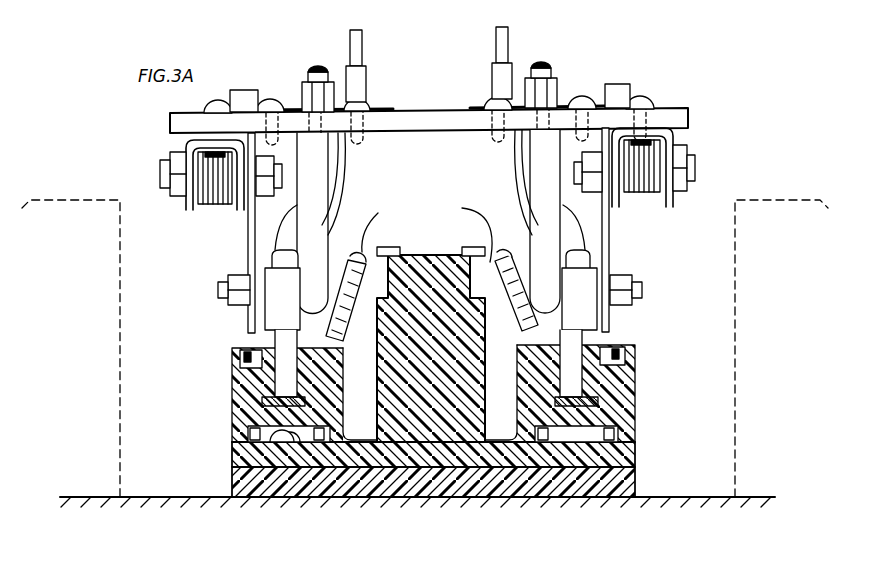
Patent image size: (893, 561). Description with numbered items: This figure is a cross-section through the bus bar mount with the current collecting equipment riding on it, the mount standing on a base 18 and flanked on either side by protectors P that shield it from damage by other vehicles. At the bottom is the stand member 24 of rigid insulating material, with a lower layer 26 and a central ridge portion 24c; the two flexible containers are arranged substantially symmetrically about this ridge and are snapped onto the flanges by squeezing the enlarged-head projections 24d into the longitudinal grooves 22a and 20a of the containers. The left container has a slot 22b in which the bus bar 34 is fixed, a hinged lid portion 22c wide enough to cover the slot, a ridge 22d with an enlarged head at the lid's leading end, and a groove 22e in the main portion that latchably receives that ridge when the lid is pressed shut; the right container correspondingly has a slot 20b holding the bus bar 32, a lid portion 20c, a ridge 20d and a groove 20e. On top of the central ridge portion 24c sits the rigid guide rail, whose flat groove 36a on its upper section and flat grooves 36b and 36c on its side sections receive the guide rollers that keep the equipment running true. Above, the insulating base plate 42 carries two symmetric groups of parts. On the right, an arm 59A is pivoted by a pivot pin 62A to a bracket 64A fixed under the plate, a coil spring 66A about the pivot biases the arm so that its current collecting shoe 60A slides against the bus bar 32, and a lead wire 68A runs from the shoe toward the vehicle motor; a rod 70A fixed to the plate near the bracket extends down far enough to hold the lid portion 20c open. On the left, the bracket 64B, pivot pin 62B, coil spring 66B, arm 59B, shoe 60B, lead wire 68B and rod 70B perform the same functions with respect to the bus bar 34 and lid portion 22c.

The mounting base / ground 18 is at (158, 497).
The protector P is at (89, 204).
The groove 20a is at (620, 426).
The slot 20b is at (590, 336).
The lid portion 20c is at (474, 231).
The ridge 20d is at (508, 258).
The groove 20e is at (612, 354).
The groove 22a is at (250, 436).
The slot 22b is at (270, 350).
The lid portion 22c is at (379, 229).
The ridge 22d is at (346, 258).
The groove 22e is at (242, 360).
The stand member 24 is at (455, 484).
The central ridge portion 24c is at (367, 440).
The projection 24d is at (258, 440).
The lower base layer 26 is at (630, 478).
The bus bar 32 is at (600, 401).
The bus bar 34 is at (262, 401).
The flat groove 36a is at (431, 331).
The flat groove 36b is at (470, 258).
The flat groove 36c is at (382, 258).
The base plate 42 is at (680, 108).
The arm 59A is at (608, 238).
The arm 59B is at (250, 260).
The current collecting shoe 60A is at (585, 340).
The current collecting shoe 60B is at (272, 334).
The pivot pin 62A is at (690, 170).
The pivot pin 62B is at (193, 180).
The bracket 64A is at (674, 142).
The bracket 64B is at (190, 212).
The coil spring 66A is at (645, 196).
The coil spring 66B is at (215, 206).
The lead wire 68A is at (508, 44).
The lead wire 68B is at (362, 48).
The rod 70A is at (528, 220).
The rod 70B is at (320, 215).